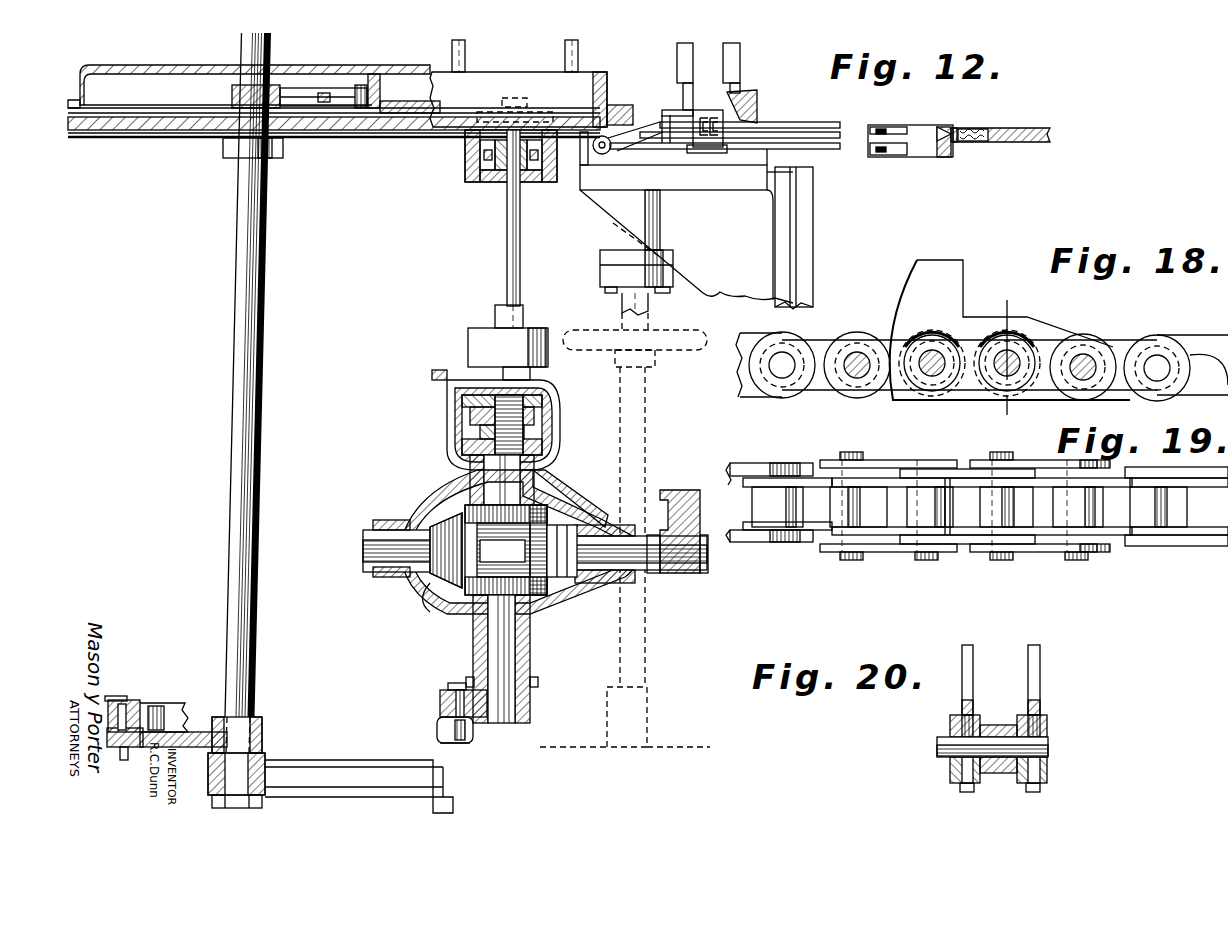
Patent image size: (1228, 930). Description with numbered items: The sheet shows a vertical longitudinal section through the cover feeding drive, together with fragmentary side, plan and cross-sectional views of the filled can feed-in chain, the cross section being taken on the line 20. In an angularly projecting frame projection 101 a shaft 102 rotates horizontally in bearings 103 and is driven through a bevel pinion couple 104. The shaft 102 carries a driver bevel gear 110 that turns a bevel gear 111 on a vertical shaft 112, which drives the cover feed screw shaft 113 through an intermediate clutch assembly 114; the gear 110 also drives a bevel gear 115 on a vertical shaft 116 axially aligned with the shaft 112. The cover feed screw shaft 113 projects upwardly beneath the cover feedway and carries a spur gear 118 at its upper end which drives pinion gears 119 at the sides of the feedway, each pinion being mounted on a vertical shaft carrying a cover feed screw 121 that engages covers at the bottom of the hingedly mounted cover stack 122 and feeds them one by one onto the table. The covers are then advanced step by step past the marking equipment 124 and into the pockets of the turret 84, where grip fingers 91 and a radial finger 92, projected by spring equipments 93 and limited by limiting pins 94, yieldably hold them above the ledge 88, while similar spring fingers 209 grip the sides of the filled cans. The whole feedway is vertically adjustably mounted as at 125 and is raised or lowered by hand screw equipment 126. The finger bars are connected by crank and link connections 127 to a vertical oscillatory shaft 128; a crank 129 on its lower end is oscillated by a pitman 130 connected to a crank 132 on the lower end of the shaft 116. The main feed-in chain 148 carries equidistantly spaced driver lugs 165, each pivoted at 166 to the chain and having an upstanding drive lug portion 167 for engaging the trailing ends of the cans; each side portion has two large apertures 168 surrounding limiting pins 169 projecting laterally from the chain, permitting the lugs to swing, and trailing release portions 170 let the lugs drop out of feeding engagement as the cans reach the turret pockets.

In FIG. 18, the section line 20 is at (1013, 300).
In FIG. 12, the turret 84 is at (1040, 128).
In FIG. 12, the ledge 88 is at (920, 160).
In FIG. 12, the grip fingers 91 is at (890, 112).
In FIG. 12, the finger 92 is at (947, 126).
In FIG. 12, the spring equipments 93 is at (1000, 118).
In FIG. 12, the limiting pins 94 is at (956, 140).
In FIG. 12, the frame projection 101 is at (583, 597).
In FIG. 12, the shaft 102 is at (506, 550).
In FIG. 12, the bearings 103 is at (393, 572).
In FIG. 12, the bevel pinion couple 104 is at (443, 513).
In FIG. 12, the driver bevel gear 110 is at (560, 573).
In FIG. 12, the bevel gear 111 is at (540, 500).
In FIG. 12, the vertical shaft 112 is at (532, 466).
In FIG. 12, the cover feed screw shaft 113 is at (506, 216).
In FIG. 12, the clutch assembly 114 is at (543, 396).
In FIG. 12, the bevel gear 115 is at (467, 594).
In FIG. 12, the vertical shaft 116 is at (500, 655).
In FIG. 12, the spur gear 118 is at (488, 154).
In FIG. 12, the pinion gears 119 is at (396, 141).
In FIG. 12, the cover feed screw 121 is at (560, 98).
In FIG. 12, the cover stack 122 is at (515, 68).
In FIG. 12, the marking equipment 124 is at (708, 83).
In FIG. 12, the vertically-adjustable mounting 125 is at (783, 202).
In FIG. 12, the hand screw equipment 126 is at (677, 351).
In FIG. 12, the crank and link connections 127 is at (318, 104).
In FIG. 12, the oscillatory shaft 128 is at (272, 268).
In FIG. 12, the crank 129 is at (153, 722).
In FIG. 12, the pitman 130 is at (141, 696).
In FIG. 12, the crank 132 is at (443, 706).
In FIG. 18, the main feed-in chain 148 is at (757, 387).
In FIG. 19, the main feed-in chain 148 is at (776, 544).
In FIG. 18, the driver lugs 165 is at (900, 290).
In FIG. 19, the driver lugs 165 is at (887, 537).
In FIG. 18, the pivot 166 is at (1090, 363).
In FIG. 19, the pivot 166 is at (1080, 567).
In FIG. 18, the drive lug portion 167 is at (917, 260).
In FIG. 19, the drive lug portion 167 is at (930, 472).
In FIG. 20, the drive lug portion 167 is at (1030, 652).
In FIG. 18, the apertures 168 is at (927, 324).
In FIG. 19, the apertures 168 is at (903, 463).
In FIG. 20, the apertures 168 is at (950, 720).
In FIG. 18, the limiting pins 169 is at (933, 380).
In FIG. 19, the limiting pins 169 is at (975, 555).
In FIG. 20, the limiting pins 169 is at (1050, 750).
In FIG. 18, the release portions 170 is at (893, 393).
In FIG. 12, the spring fingers 209 is at (882, 148).